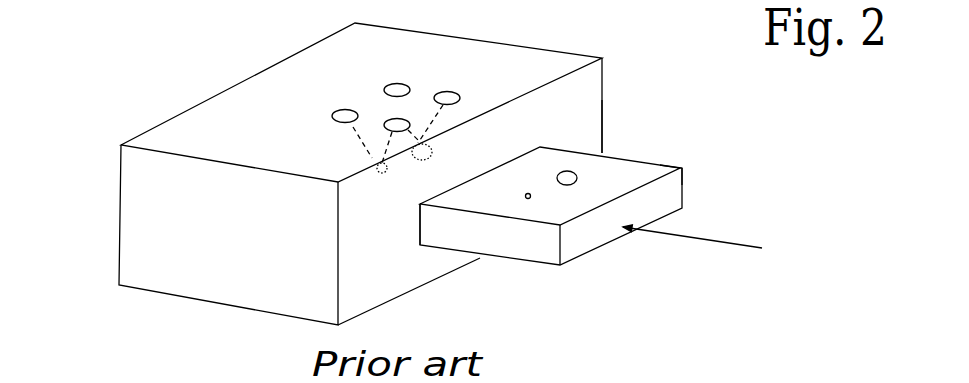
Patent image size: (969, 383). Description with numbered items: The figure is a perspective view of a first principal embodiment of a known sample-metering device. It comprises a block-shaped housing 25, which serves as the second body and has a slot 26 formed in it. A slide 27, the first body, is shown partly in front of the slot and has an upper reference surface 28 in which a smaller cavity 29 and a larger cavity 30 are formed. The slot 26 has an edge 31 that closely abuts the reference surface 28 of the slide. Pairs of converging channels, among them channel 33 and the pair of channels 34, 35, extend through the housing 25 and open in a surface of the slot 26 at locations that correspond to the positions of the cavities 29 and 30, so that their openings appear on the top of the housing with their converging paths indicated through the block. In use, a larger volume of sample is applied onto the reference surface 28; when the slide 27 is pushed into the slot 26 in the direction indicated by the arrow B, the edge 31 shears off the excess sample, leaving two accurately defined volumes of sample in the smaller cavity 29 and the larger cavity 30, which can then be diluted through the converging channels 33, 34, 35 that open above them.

The block-shaped housing 25 is at (140, 222).
The slot 26 is at (424, 222).
The slide 27 is at (672, 193).
The upper reference surface 28 is at (680, 168).
The smaller cavity 29 is at (528, 199).
The larger cavity 30 is at (362, 138).
The edge 31 is at (527, 149).
The converging channel 33 is at (380, 152).
The converging channel 34 is at (403, 110).
The converging channel 35 is at (440, 123).
The arrow B is at (697, 242).